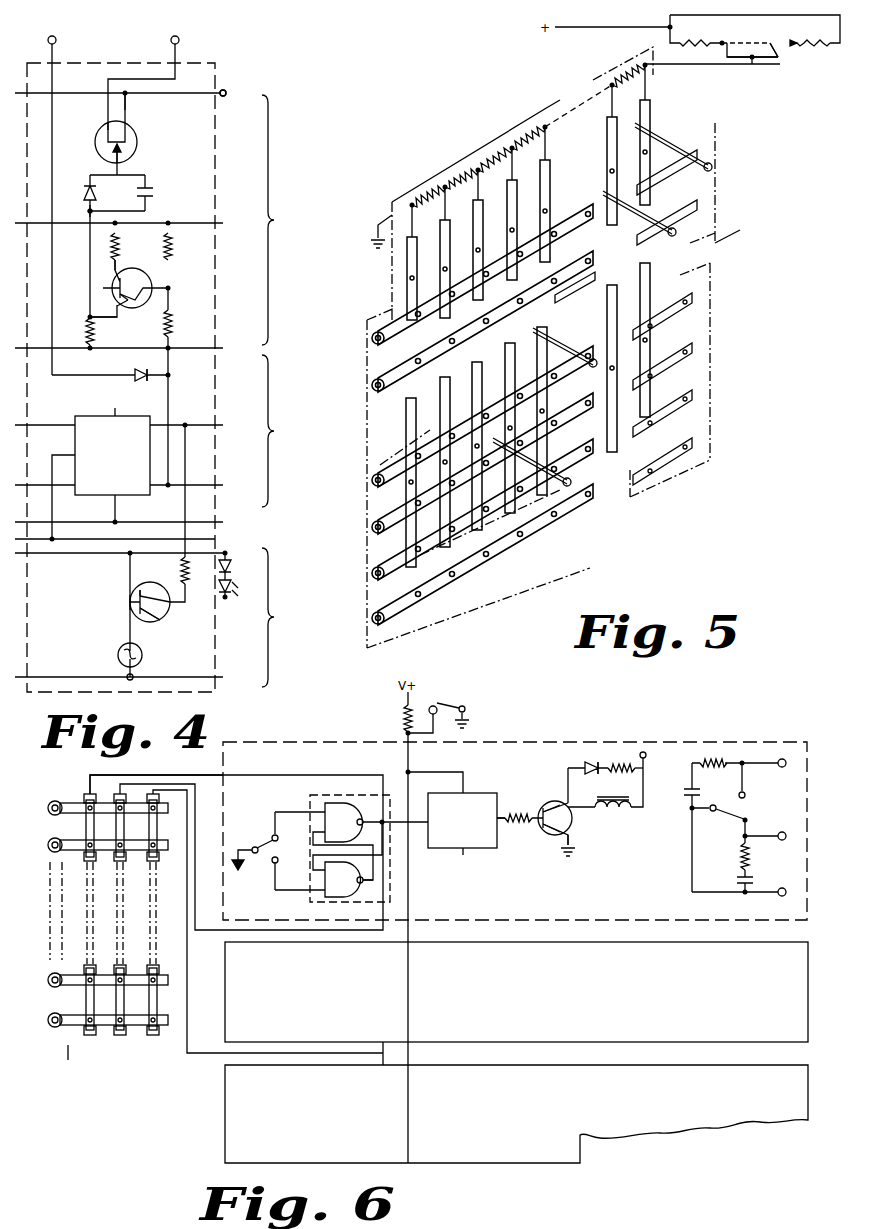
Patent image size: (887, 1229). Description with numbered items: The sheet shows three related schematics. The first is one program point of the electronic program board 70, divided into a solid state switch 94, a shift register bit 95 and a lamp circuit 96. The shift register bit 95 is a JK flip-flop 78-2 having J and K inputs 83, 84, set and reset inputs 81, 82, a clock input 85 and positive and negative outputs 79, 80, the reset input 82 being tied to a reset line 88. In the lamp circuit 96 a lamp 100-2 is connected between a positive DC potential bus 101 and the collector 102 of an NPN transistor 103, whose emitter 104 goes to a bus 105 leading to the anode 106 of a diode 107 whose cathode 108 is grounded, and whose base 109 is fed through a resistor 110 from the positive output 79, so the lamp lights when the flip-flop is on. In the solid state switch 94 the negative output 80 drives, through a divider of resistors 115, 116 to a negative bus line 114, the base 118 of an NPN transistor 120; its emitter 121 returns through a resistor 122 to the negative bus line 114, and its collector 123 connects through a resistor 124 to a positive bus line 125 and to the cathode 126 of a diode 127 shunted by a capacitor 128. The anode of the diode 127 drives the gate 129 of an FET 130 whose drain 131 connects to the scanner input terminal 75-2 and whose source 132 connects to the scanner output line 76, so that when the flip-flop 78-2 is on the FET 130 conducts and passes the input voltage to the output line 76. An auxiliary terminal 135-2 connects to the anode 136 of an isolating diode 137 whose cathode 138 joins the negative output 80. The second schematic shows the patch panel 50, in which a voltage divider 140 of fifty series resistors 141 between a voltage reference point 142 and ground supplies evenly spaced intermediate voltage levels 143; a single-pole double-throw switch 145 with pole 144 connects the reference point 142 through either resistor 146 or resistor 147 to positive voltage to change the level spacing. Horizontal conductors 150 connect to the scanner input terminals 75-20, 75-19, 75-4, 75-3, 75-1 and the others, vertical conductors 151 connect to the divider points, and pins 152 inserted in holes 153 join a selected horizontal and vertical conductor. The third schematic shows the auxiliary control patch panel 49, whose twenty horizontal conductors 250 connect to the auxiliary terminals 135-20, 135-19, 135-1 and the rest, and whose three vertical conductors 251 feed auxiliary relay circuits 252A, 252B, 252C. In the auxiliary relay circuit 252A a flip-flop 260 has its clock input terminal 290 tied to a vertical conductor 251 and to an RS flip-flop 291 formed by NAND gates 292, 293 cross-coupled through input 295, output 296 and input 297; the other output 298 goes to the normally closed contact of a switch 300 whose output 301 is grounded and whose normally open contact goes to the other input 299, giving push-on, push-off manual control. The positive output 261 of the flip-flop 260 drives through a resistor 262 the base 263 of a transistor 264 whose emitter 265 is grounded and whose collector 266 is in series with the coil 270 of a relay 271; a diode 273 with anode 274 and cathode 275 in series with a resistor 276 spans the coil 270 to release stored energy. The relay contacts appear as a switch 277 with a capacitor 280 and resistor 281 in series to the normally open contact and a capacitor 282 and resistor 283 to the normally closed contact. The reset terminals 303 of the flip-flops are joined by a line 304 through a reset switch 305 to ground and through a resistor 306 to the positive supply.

In FIG. 4, the auxiliary terminal 135-2 is at (57, 42).
In FIG. 6, the auxiliary terminal 135-2 is at (95, 982).
In FIG. 4, the scanner input terminal 75-2 is at (180, 42).
In FIG. 5, the scanner input terminal 75-2 is at (466, 516).
In FIG. 4, the scanner output line 76 is at (226, 90).
In FIG. 4, the electronic program board 70 is at (226, 96).
In FIG. 4, the FET 130 is at (144, 134).
In FIG. 4, the drain 131 is at (106, 120).
In FIG. 4, the source 132 is at (128, 118).
In FIG. 4, the gate 129 is at (128, 155).
In FIG. 4, the diode 127 is at (84, 192).
In FIG. 4, the capacitor 128 is at (153, 192).
In FIG. 4, the cathode 126 is at (88, 211).
In FIG. 4, the negative bus line 114 is at (206, 219).
In FIG. 4, the resistor 122 is at (110, 246).
In FIG. 4, the resistor 116 is at (186, 250).
In FIG. 4, the NPN transistor 120 is at (101, 288).
In FIG. 4, the emitter 121 is at (118, 278).
In FIG. 4, the base 118 is at (122, 310).
In FIG. 4, the resistor 115 is at (178, 318).
In FIG. 4, the resistor 124 is at (85, 336).
In FIG. 4, the collector 123 is at (111, 320).
In FIG. 4, the positive bus line 125 is at (193, 352).
In FIG. 4, the anode 136 is at (134, 373).
In FIG. 4, the cathode 138 is at (154, 366).
In FIG. 4, the diode 137 is at (141, 384).
In FIG. 4, the flip-flop 78-2 is at (112, 455).
In FIG. 4, the J input 83 is at (72, 421).
In FIG. 4, the set input 81 is at (119, 410).
In FIG. 4, the clock input 85 is at (68, 453).
In FIG. 4, the K input 84 is at (63, 497).
In FIG. 4, the reset input 82 is at (122, 508).
In FIG. 4, the positive output 79 is at (223, 430).
In FIG. 4, the negative output 80 is at (222, 472).
In FIG. 4, the reset line 88 is at (215, 524).
In FIG. 4, the solid state switch 94 is at (276, 222).
In FIG. 4, the shift register bit 95 is at (276, 438).
In FIG. 4, the lamp circuit 96 is at (276, 620).
In FIG. 4, the bus 105 is at (96, 561).
In FIG. 4, the resistor 110 is at (179, 570).
In FIG. 4, the collector 102 is at (134, 609).
In FIG. 4, the NPN transistor 103 is at (106, 603).
In FIG. 4, the emitter 104 is at (133, 595).
In FIG. 4, the base 109 is at (165, 616).
In FIG. 4, the anode 106 is at (231, 566).
In FIG. 4, the diode 107 is at (232, 590).
In FIG. 4, the cathode 108 is at (236, 604).
In FIG. 4, the lamp 100-2 is at (143, 659).
In FIG. 4, the positive DC potential bus 101 is at (69, 674).
In FIG. 5, the resistor 146 is at (716, 40).
In FIG. 5, the resistor 147 is at (826, 40).
In FIG. 5, the pole 144 is at (752, 62).
In FIG. 5, the single-pole double-throw switch 145 is at (776, 54).
In FIG. 5, the voltage reference point 142 is at (650, 72).
In FIG. 5, the resistors 141 is at (496, 152).
In FIG. 5, the intermediate voltage reference points 143 is at (546, 132).
In FIG. 5, the voltage divider 140 is at (559, 118).
In FIG. 5, the patch panel 50 is at (760, 219).
In FIG. 5, the scanner input terminal 75-20 is at (449, 282).
In FIG. 5, the scanner input terminal 75-19 is at (463, 328).
In FIG. 5, the scanner input terminal 75-4 is at (466, 423).
In FIG. 5, the scanner input terminal 75-3 is at (466, 470).
In FIG. 5, the scanner input terminal 75-1 is at (449, 563).
In FIG. 5, the horizontal conductors 150 is at (696, 352).
In FIG. 5, the vertical conductors 151 is at (602, 288).
In FIG. 5, the pins 152 is at (592, 340).
In FIG. 5, the holes 153 is at (595, 414).
In FIG. 6, the vertical conductors 251 is at (158, 950).
In FIG. 6, the auxiliary terminal 135-20 is at (91, 803).
In FIG. 6, the auxiliary terminal 135-19 is at (91, 847).
In FIG. 6, the auxiliary terminal 135-1 is at (91, 1014).
In FIG. 6, the horizontal conductors 250 is at (74, 790).
In FIG. 6, the auxiliary control patch panel 49 is at (67, 1062).
In FIG. 6, the auxiliary relay circuit 252A is at (796, 740).
In FIG. 6, the resistor 306 is at (402, 716).
In FIG. 6, the switch 305 is at (440, 694).
In FIG. 6, the line 304 is at (413, 761).
In FIG. 6, the reset terminals 303 is at (468, 786).
In FIG. 6, the clock input terminal 290 is at (428, 845).
In FIG. 6, the flip-flop 260 is at (468, 856).
In FIG. 6, the RS flip-flop 291 is at (335, 790).
In FIG. 6, the NAND gate 292 is at (347, 836).
In FIG. 6, the NAND gate 293 is at (343, 864).
In FIG. 6, the input 297 is at (300, 820).
In FIG. 6, the other output 298 is at (294, 813).
In FIG. 6, the switch output 301 is at (262, 841).
In FIG. 6, the switch 300 is at (262, 868).
In FIG. 6, the input 295 is at (312, 881).
In FIG. 6, the other input 299 is at (296, 894).
In FIG. 6, the output 296 is at (372, 882).
In FIG. 6, the resistor 262 is at (518, 832).
In FIG. 6, the transistor 263 is at (546, 810).
In FIG. 6, the positive output 261 is at (504, 814).
In FIG. 6, the transistor 264 is at (588, 841).
In FIG. 6, the emitter 265 is at (570, 840).
In FIG. 6, the collector 266 is at (582, 825).
In FIG. 6, the coil 270 is at (640, 810).
In FIG. 6, the relay 271 is at (632, 802).
In FIG. 6, the cathode 275 is at (607, 787).
In FIG. 6, the anode 274 is at (580, 764).
In FIG. 6, the diode 273 is at (594, 760).
In FIG. 6, the resistor 276 is at (626, 762).
In FIG. 6, the resistor 281 is at (740, 735).
In FIG. 6, the capacitor 280 is at (709, 827).
In FIG. 6, the switch 277 is at (756, 806).
In FIG. 6, the resistor 283 is at (766, 871).
In FIG. 6, the capacitor 282 is at (753, 880).
In FIG. 6, the auxiliary relay circuit 252B is at (516, 993).
In FIG. 6, the auxiliary relay circuit 252C is at (516, 1114).